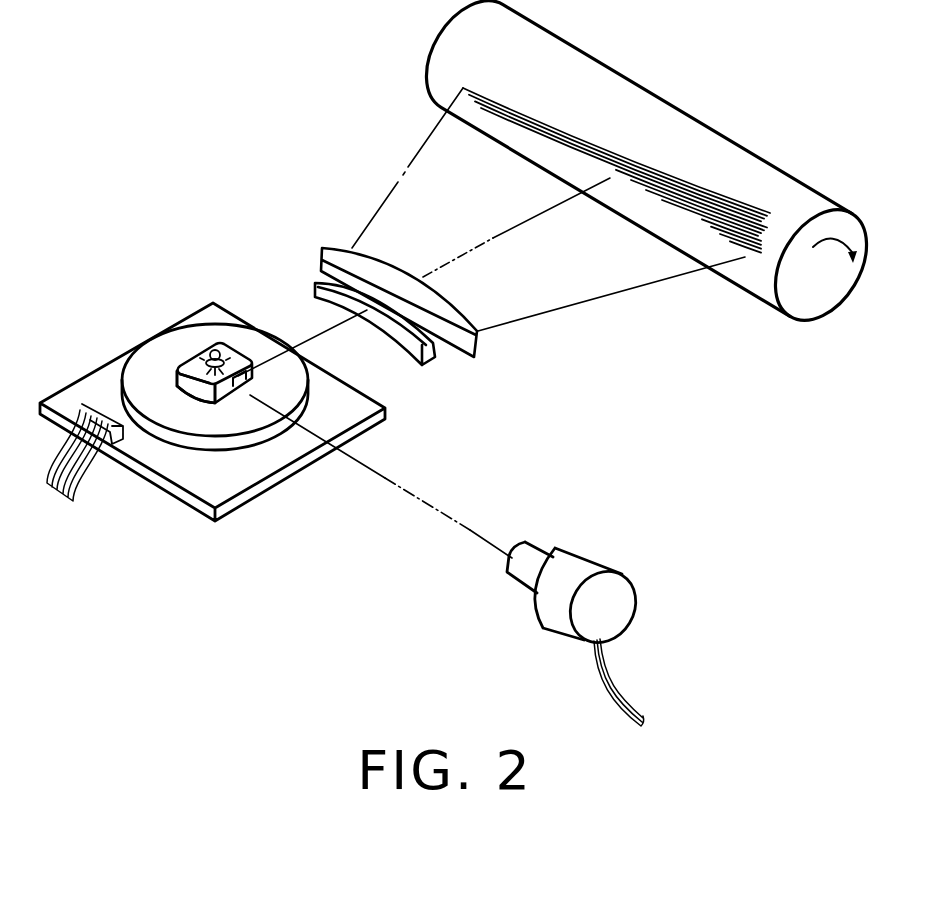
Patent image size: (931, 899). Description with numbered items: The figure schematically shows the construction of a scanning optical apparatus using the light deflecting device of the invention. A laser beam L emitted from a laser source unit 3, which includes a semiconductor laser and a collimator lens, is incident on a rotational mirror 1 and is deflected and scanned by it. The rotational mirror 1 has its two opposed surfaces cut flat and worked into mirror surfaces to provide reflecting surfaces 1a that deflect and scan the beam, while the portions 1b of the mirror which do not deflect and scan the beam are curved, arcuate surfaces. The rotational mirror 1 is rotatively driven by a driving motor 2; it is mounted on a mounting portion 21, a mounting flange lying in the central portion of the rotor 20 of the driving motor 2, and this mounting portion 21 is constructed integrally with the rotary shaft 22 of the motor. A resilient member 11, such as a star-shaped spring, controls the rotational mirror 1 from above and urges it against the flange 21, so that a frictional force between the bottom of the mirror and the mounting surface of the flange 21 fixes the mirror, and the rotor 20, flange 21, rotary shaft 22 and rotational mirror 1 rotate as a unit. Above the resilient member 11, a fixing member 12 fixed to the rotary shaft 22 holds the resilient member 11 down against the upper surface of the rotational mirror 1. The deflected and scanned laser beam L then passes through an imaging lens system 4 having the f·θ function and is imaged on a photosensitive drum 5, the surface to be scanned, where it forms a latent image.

The rotational mirror 1 is at (187, 368).
The reflecting surfaces 1a is at (232, 400).
The portions of the rotational mirror 1b is at (183, 383).
The driving motor 2 is at (270, 463).
The laser source unit 3 is at (595, 562).
The imaging lens system 4 is at (502, 356).
The photosensitive drum 5 is at (664, 116).
The resilient member 11 is at (230, 350).
The fixing member 12 is at (192, 395).
The rotor 20 is at (262, 347).
The mounting portion 21 is at (258, 402).
The rotary shaft 22 is at (212, 350).
The laser beam L is at (491, 323).